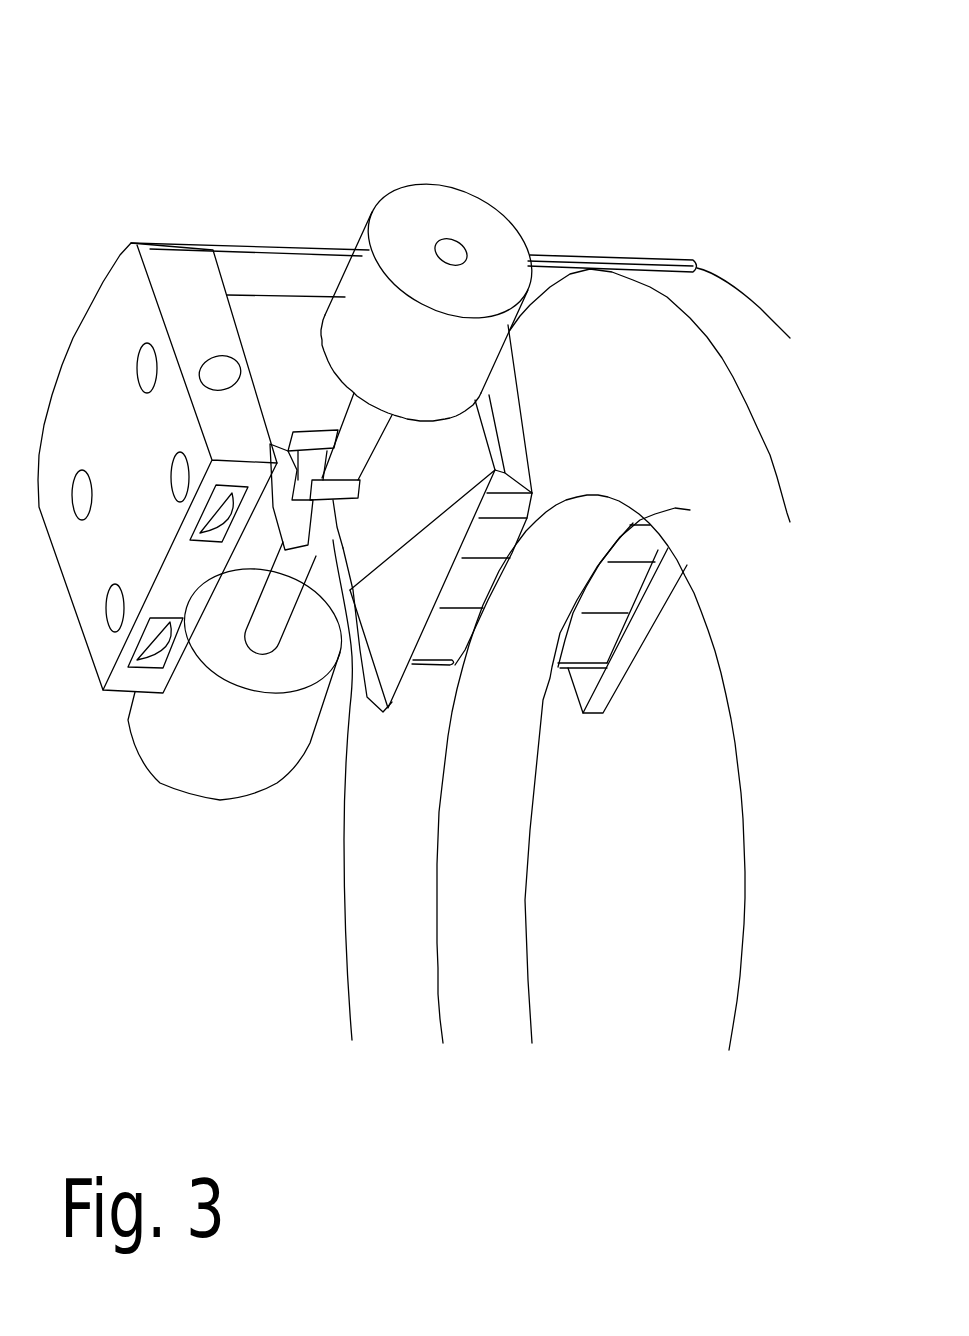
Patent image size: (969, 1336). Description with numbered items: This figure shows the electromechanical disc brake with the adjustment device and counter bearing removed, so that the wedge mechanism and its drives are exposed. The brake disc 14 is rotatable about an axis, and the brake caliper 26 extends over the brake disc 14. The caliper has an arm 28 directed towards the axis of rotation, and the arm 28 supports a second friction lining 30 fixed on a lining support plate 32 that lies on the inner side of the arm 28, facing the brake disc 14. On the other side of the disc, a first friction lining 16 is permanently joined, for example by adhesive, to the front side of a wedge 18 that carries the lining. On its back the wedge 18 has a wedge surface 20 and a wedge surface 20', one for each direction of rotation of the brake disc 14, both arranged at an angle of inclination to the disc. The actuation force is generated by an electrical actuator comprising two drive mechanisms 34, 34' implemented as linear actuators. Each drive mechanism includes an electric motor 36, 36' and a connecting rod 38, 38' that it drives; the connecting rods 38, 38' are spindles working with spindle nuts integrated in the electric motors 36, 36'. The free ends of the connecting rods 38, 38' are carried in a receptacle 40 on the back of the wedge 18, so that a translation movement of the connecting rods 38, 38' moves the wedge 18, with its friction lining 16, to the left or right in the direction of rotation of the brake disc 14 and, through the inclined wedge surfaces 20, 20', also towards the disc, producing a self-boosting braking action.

The brake disc 14 is at (680, 357).
The first friction lining 16 is at (510, 407).
The wedge 18 is at (388, 605).
The wedge surface 20 is at (345, 790).
The wedge surface 20' is at (414, 530).
The brake caliper 26 is at (248, 270).
The arm 28 is at (660, 637).
The second friction lining 30 is at (637, 542).
The lining support plate 32 is at (603, 700).
The drive mechanism 34 is at (130, 880).
The drive mechanism 34' is at (542, 109).
The electric motor 36 is at (242, 675).
The electric motor 36' is at (438, 289).
The connecting rod 38 is at (280, 611).
The connecting rod 38' is at (392, 436).
The receptacle 40 is at (277, 382).